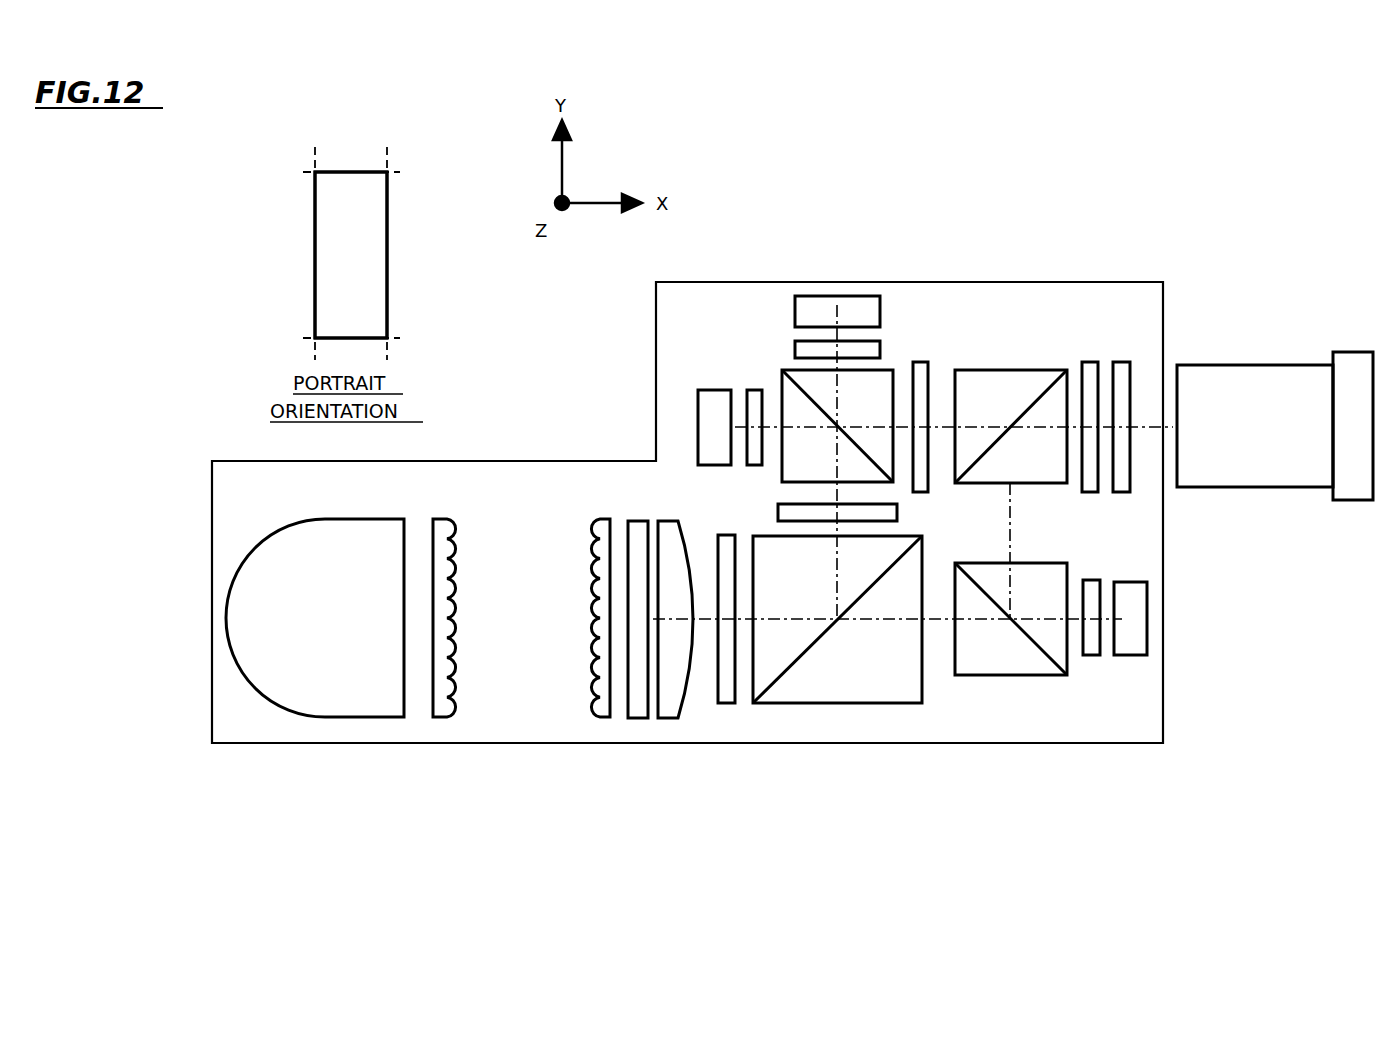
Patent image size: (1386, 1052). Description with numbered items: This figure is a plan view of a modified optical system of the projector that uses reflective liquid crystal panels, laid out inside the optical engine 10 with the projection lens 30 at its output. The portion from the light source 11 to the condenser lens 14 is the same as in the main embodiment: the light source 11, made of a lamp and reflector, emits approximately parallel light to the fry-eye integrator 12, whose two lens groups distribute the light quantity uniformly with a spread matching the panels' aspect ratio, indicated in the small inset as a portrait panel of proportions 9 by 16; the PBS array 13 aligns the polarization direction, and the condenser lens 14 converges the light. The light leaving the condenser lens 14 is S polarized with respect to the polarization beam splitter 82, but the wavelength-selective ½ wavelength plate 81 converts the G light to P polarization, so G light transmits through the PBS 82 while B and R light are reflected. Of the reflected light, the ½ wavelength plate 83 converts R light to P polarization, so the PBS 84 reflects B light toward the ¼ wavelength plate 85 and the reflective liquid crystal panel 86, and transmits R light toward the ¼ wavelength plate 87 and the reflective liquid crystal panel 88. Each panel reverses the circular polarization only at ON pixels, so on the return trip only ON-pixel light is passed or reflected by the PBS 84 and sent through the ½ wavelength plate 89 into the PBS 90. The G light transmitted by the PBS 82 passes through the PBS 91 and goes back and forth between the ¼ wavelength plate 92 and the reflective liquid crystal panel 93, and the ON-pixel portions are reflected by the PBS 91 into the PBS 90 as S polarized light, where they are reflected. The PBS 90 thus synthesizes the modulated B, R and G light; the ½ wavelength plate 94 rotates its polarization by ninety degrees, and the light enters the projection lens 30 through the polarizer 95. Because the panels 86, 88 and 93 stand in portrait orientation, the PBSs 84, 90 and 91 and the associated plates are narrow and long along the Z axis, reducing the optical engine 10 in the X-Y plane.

The liquid crystal panel (portrait orientation, aspect width) 9 is at (351, 251).
The liquid crystal panel (portrait orientation, aspect height) 16 is at (368, 255).
The optical engine 10 is at (1010, 752).
The light source 11 is at (250, 580).
The fry-eye integrator 12 is at (600, 512).
The PBS array 13 is at (638, 725).
The condenser lens 14 is at (665, 725).
The projection lens 30 is at (1255, 375).
The ½ wavelength plate 81 is at (725, 703).
The polarization beam splitter 82 is at (822, 702).
The ½ wavelength plate 83 is at (768, 512).
The PBS 84 is at (893, 484).
The ¼ wavelength plate 85 is at (752, 385).
The reflective liquid crystal panel 86 is at (710, 385).
The ¼ wavelength plate 87 is at (880, 342).
The reflective liquid crystal panel 88 is at (858, 296).
The ½ wavelength plate 89 is at (928, 365).
The PBS 90 is at (1005, 368).
The PBS 91 is at (1035, 563).
The ¼ wavelength plate 92 is at (1093, 578).
The reflective liquid crystal panel 93 is at (1130, 656).
The ½ wavelength plate 94 is at (1085, 362).
The polarizer 95 is at (1130, 362).